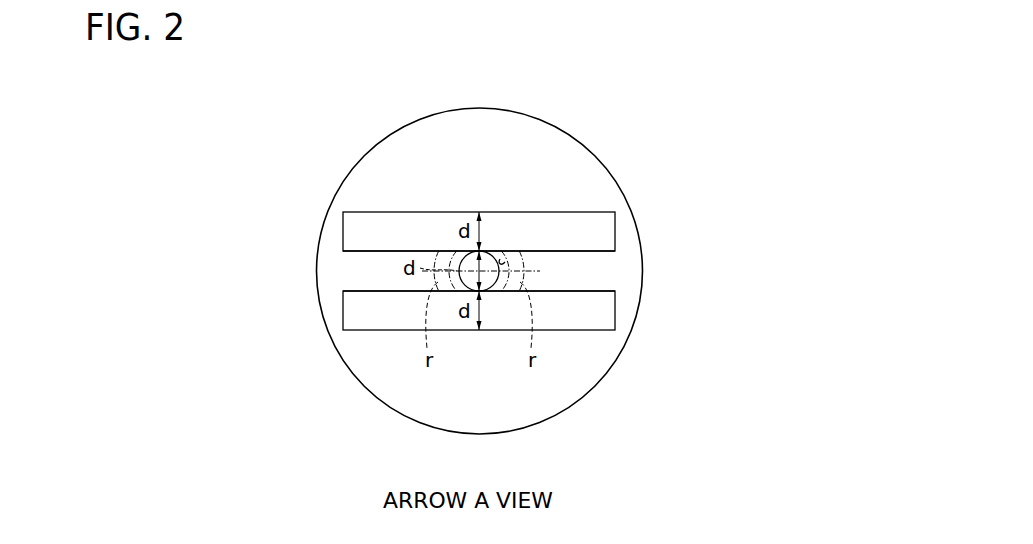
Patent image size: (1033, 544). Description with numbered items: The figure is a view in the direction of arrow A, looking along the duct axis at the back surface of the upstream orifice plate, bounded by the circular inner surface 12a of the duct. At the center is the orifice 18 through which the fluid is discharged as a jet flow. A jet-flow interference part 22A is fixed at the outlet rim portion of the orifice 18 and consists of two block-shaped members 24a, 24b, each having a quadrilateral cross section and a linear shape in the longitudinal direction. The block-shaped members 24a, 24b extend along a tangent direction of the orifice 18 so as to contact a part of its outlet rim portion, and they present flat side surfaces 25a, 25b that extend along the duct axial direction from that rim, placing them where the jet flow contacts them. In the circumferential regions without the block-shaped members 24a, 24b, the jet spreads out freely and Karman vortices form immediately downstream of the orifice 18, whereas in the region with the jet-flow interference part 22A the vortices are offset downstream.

The inner surface of the duct 12a is at (506, 113).
The block-shaped member 24a is at (367, 233).
The block-shaped member 24b is at (367, 311).
The flat side surface 25a is at (596, 250).
The flat side surface 25b is at (590, 292).
The orifice 18 is at (505, 264).
The jet-flow interference part 22A is at (505, 262).